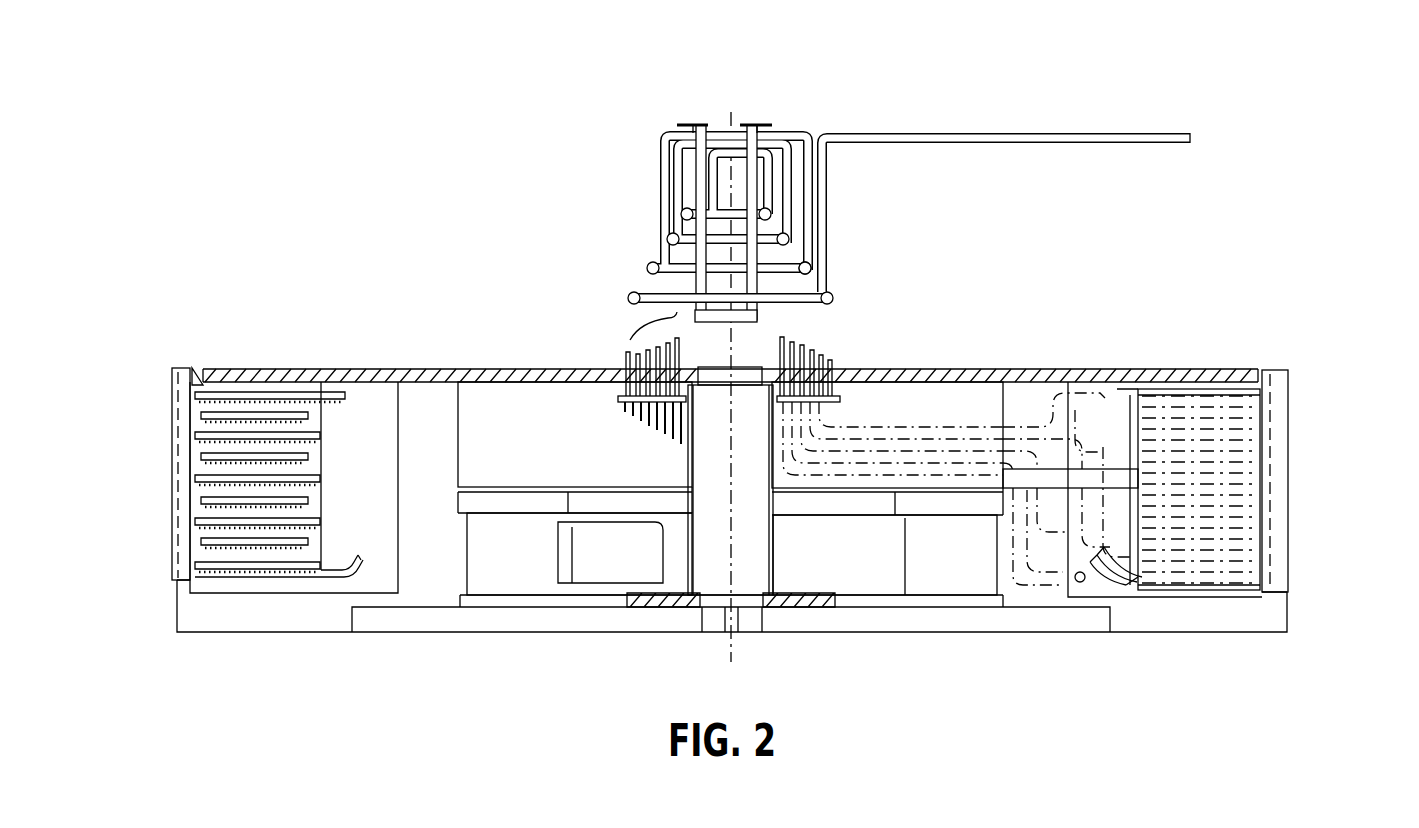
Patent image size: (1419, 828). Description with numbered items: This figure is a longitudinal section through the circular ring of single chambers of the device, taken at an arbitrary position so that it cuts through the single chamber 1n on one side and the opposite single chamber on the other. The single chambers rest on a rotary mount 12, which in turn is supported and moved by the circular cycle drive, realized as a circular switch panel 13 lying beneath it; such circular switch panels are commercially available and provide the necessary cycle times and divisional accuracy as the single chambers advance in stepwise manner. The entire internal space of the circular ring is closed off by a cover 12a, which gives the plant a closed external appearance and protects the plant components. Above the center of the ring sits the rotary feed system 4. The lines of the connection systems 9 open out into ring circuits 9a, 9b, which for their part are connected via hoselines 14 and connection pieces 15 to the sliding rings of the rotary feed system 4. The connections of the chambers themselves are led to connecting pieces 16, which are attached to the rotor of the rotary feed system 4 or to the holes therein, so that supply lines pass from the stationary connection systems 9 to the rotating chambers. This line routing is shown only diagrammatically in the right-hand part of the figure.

The rotary feed system 4 is at (608, 344).
The connection systems 9 is at (985, 134).
The ring circuit 9a is at (836, 298).
The ring circuit 9b is at (811, 262).
The rotary mount 12 is at (288, 608).
The cover 12a is at (388, 372).
The circular switch panel 13 is at (618, 614).
The hoselines 14 is at (629, 345).
The connection pieces 15 is at (840, 357).
The connecting pieces 16 is at (845, 425).
The single chamber 1n is at (227, 470).